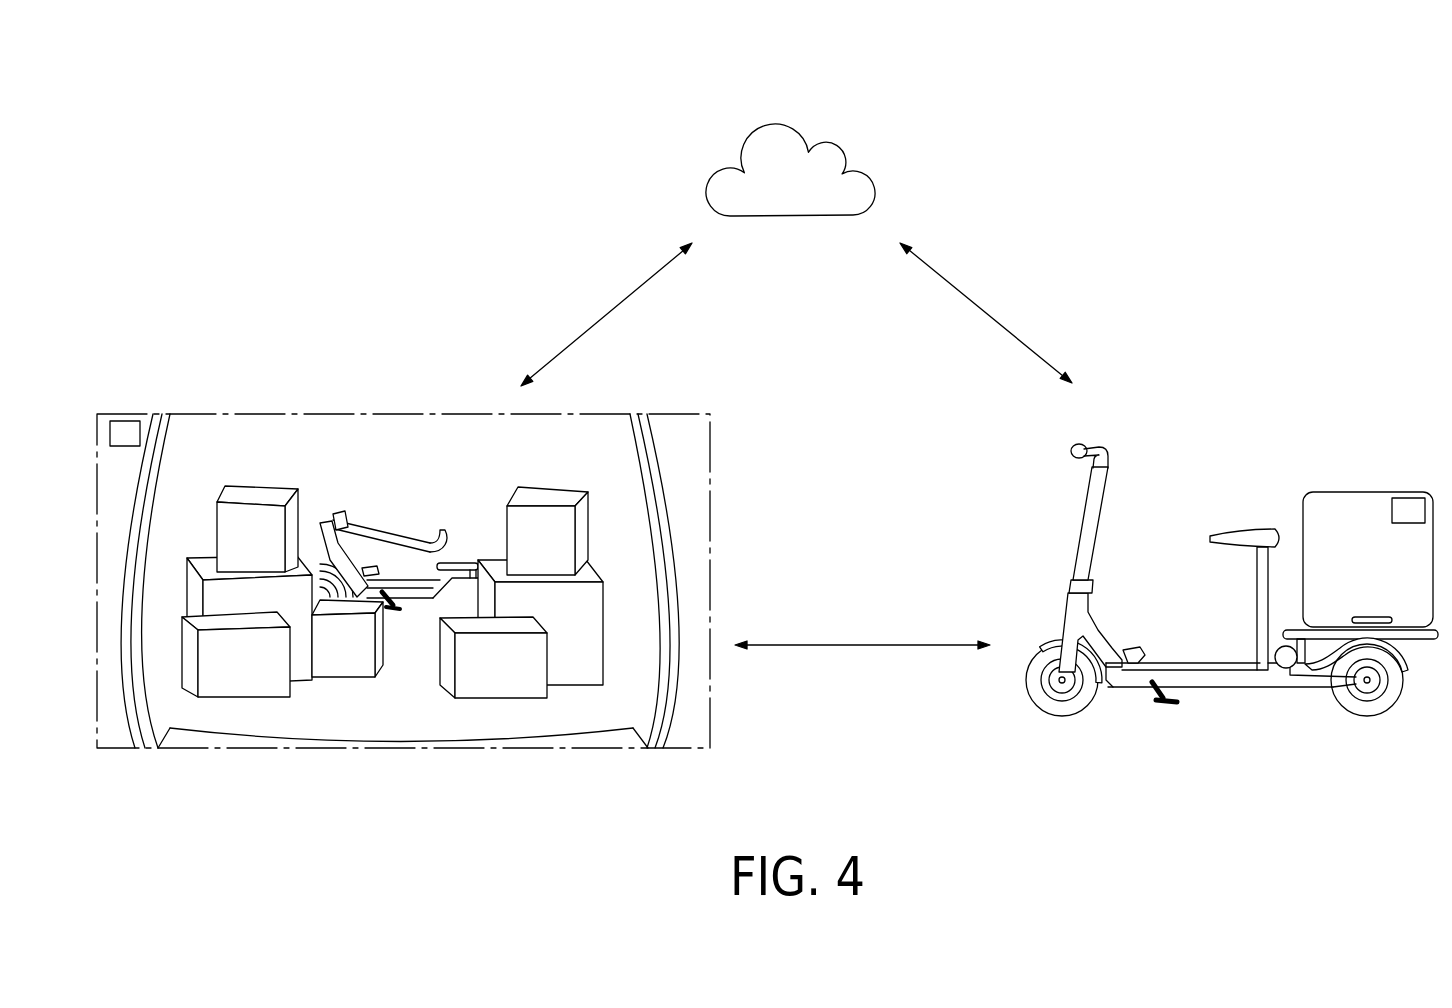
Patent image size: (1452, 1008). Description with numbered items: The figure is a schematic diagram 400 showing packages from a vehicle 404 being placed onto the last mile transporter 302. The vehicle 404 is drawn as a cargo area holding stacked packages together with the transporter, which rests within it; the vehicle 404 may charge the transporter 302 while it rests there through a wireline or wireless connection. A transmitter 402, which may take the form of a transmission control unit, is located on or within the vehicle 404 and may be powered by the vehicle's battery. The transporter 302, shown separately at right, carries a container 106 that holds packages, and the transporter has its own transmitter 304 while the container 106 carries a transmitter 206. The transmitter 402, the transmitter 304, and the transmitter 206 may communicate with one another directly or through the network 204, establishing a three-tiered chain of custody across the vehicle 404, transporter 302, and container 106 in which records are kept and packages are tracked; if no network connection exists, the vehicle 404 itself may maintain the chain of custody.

The schematic diagram 400 is at (404, 96).
The network 204 is at (865, 191).
The vehicle 404 is at (648, 483).
The transmitter 402 is at (122, 428).
The last mile transporter 302 is at (360, 522).
The transmitter 304 is at (1286, 662).
The container 106 is at (1340, 506).
The transmitter 206 is at (1407, 512).